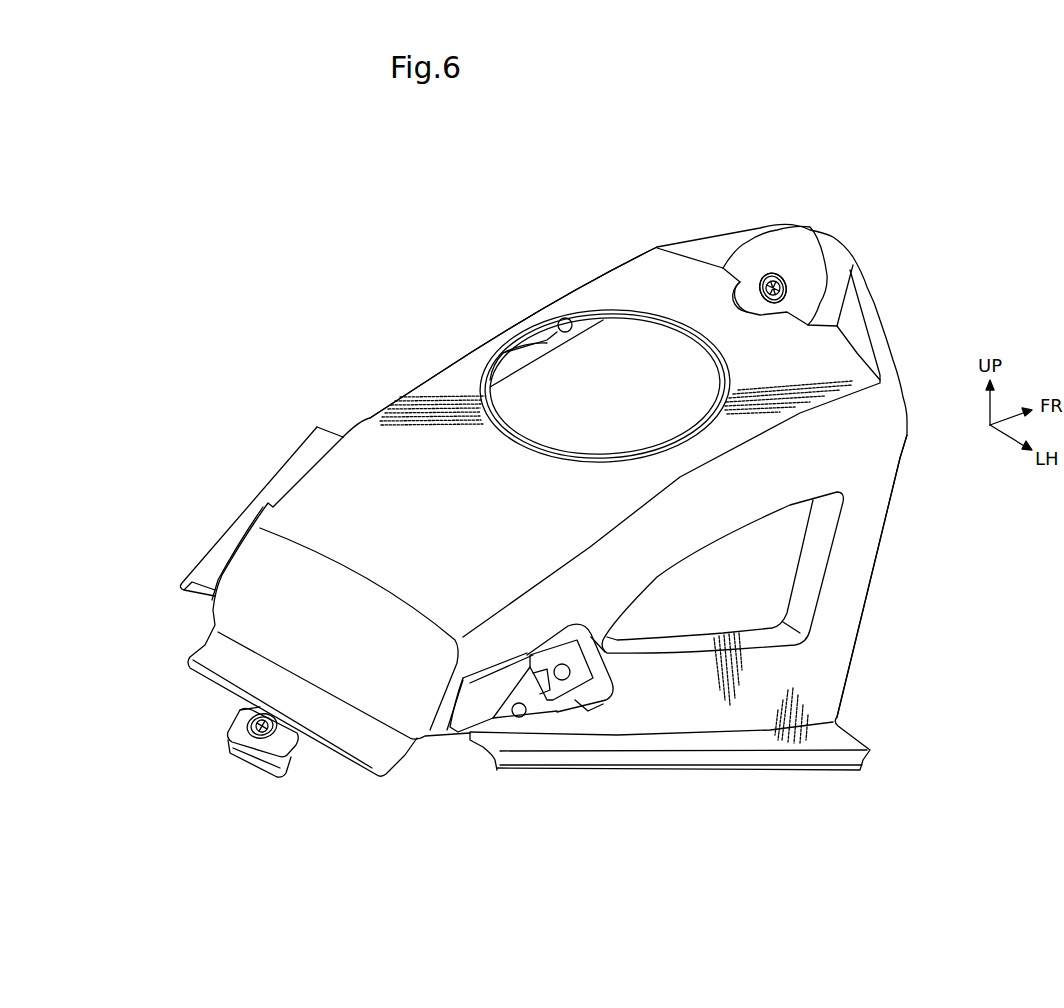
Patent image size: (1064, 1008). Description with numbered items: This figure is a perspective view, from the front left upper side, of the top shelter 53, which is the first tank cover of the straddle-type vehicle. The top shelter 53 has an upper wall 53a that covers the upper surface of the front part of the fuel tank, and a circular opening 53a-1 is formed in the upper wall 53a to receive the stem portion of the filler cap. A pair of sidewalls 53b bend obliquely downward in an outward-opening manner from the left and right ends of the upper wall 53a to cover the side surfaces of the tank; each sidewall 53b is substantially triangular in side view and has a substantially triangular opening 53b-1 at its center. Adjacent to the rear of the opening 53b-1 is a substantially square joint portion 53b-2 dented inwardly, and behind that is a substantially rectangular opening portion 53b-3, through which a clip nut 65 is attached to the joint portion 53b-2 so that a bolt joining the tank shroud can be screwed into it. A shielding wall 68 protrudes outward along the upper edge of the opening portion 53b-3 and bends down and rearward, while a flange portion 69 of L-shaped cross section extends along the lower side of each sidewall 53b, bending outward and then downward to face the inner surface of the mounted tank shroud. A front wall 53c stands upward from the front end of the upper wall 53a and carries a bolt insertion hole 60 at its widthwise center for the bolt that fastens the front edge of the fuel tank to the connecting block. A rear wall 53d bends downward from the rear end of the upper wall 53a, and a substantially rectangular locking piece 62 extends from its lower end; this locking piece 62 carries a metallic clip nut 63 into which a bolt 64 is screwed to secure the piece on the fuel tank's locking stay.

The top shelter 53 is at (930, 297).
The upper wall 53a is at (437, 380).
The circular opening 53a-1 is at (573, 320).
The sidewalls 53b is at (852, 465).
The substantially triangular opening 53b-1 is at (807, 587).
The joint portion 53b-2 is at (580, 693).
The opening portion 53b-3 is at (528, 717).
The front wall 53c is at (803, 255).
The rear wall 53d is at (257, 572).
The bolt insertion hole 60 is at (790, 290).
The locking piece 62 is at (297, 757).
The clip nut 63 is at (237, 722).
The bolt 64 is at (255, 737).
The clip nut 65 is at (563, 687).
The shielding wall 68 is at (222, 572).
The flange portion 69 is at (297, 443).